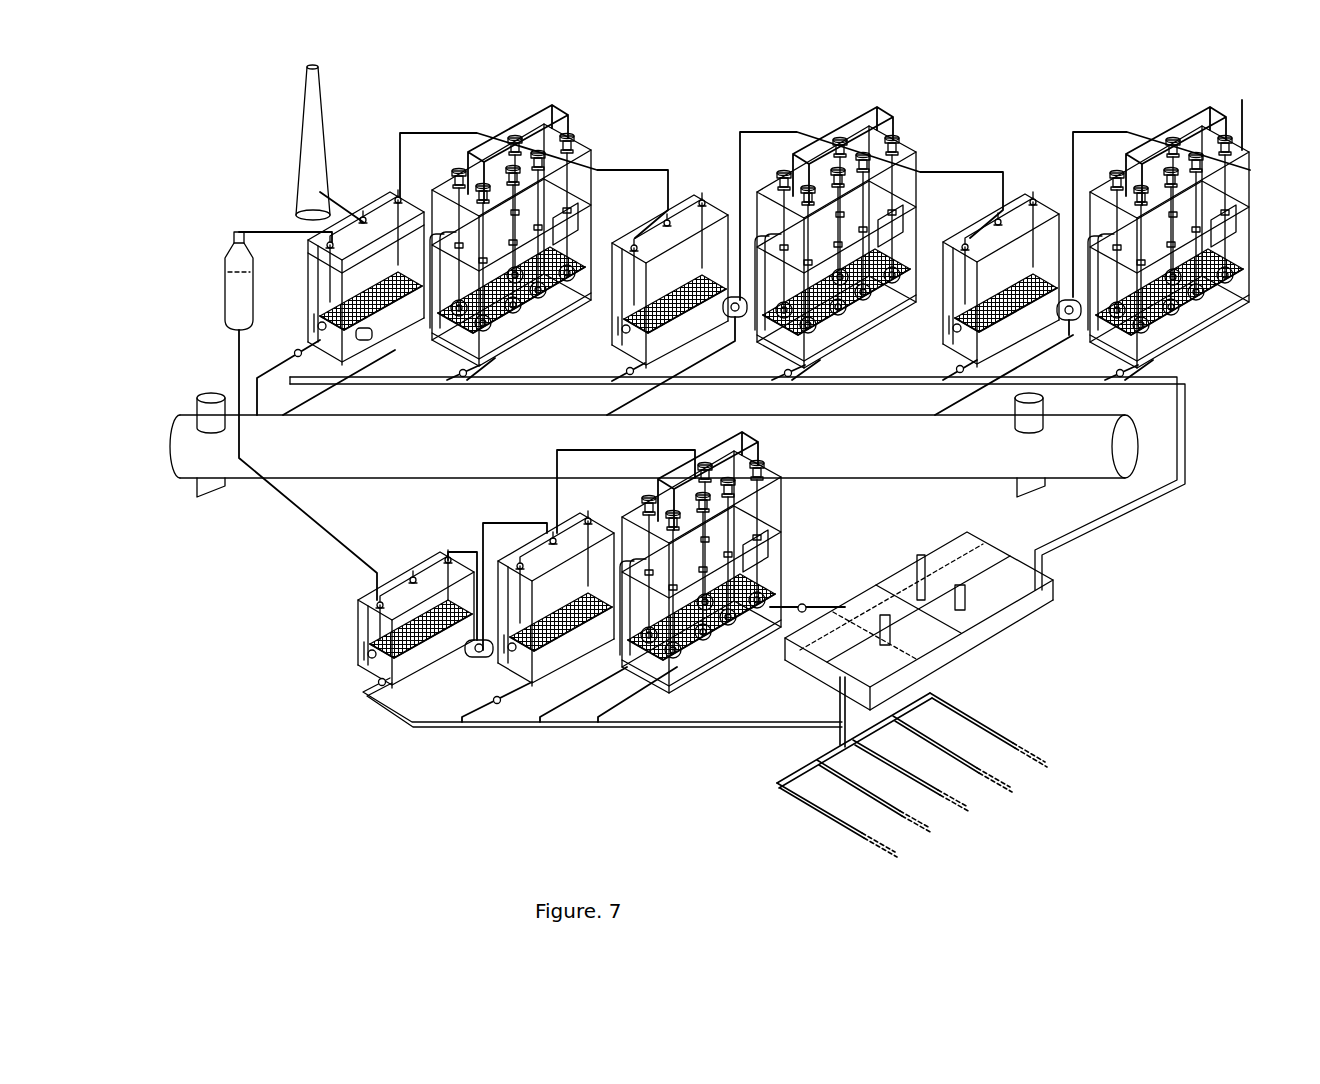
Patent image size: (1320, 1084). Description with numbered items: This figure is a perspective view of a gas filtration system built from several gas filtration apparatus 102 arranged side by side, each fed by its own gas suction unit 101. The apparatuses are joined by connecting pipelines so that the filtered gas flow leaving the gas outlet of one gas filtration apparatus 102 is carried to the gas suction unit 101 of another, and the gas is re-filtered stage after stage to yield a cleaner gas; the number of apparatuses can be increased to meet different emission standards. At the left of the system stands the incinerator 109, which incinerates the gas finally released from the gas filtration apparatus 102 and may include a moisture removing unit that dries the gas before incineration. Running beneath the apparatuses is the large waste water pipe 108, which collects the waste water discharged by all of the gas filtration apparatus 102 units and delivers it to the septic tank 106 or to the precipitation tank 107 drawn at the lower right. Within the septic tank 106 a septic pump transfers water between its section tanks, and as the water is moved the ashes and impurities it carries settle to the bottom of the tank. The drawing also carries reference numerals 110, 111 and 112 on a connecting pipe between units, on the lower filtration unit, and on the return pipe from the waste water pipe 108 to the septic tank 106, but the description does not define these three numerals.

The gas suction unit 101 is at (310, 290).
The gas filtration apparatus 102 is at (448, 186).
The septic tank 106 is at (977, 643).
The precipitation tank 107 is at (833, 785).
The waste water pipe 108 is at (815, 460).
The incinerator 109 is at (224, 299).
The connecting pipe 110 is at (630, 172).
The lower reactor unit 111 is at (778, 574).
The return pipe 112 is at (1127, 522).